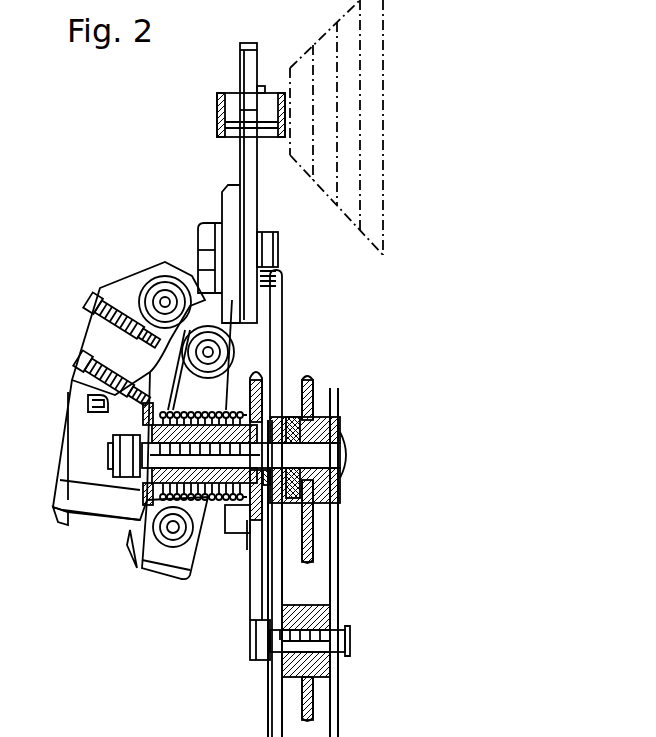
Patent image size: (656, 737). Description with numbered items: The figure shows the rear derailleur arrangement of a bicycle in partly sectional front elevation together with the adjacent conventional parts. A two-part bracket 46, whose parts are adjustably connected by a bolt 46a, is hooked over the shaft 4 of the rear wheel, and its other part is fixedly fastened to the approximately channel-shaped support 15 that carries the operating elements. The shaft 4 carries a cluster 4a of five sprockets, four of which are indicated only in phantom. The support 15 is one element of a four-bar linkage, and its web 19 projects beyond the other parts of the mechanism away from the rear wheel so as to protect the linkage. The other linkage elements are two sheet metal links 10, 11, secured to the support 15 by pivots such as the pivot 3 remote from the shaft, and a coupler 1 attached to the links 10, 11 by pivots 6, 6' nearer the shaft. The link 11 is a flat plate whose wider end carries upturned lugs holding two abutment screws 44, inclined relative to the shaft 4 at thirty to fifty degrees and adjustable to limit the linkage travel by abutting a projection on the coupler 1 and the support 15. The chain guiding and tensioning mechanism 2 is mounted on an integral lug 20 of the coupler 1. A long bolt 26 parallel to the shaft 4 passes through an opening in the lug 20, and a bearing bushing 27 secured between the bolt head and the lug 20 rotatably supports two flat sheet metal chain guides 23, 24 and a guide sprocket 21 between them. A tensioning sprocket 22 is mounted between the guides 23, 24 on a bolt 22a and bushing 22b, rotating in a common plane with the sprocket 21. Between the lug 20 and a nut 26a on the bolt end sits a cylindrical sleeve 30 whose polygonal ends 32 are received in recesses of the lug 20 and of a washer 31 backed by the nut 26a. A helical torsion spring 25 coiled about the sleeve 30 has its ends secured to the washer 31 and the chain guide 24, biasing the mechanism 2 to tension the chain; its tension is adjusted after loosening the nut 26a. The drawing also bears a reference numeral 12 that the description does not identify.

The coupler 1 is at (196, 292).
The chain guiding and tensioning mechanism 2 is at (346, 565).
The pivot 3 is at (163, 531).
The shaft 4 is at (218, 98).
The cluster of sprockets 4a is at (377, 103).
The pivot 6 is at (208, 368).
The pivot 6' is at (159, 276).
The sheet metal link 10 is at (213, 372).
The link 11 is at (130, 287).
The arm 12 is at (158, 570).
The support 15 is at (78, 515).
The web 19 is at (65, 438).
The lug 20 is at (263, 398).
The guide sprocket 21 is at (341, 478).
The tensioning sprocket 22 is at (320, 613).
The bolt 22a is at (350, 646).
The bushing 22b is at (270, 668).
The chain guide 23 is at (339, 701).
The chain guide 24 is at (275, 716).
The helical torsion spring 25 is at (140, 492).
The long bolt 26 is at (318, 456).
The nut 26a is at (118, 458).
The bearing bushing 27 is at (340, 432).
The sleeve 30 is at (210, 500).
The washer 31 is at (87, 403).
The polygonal ends 32 is at (130, 447).
The abutment screws 44 is at (85, 340).
The two-part bracket 46 is at (245, 183).
The bolt 46a is at (283, 252).